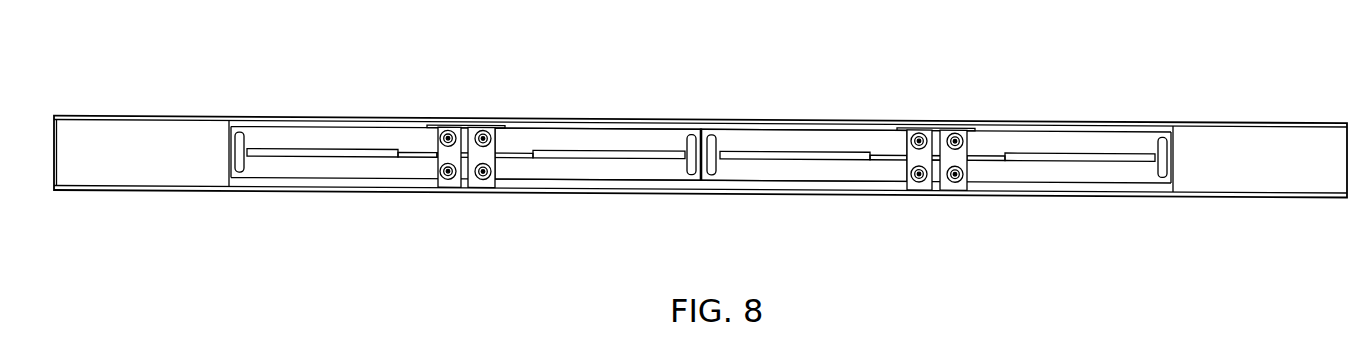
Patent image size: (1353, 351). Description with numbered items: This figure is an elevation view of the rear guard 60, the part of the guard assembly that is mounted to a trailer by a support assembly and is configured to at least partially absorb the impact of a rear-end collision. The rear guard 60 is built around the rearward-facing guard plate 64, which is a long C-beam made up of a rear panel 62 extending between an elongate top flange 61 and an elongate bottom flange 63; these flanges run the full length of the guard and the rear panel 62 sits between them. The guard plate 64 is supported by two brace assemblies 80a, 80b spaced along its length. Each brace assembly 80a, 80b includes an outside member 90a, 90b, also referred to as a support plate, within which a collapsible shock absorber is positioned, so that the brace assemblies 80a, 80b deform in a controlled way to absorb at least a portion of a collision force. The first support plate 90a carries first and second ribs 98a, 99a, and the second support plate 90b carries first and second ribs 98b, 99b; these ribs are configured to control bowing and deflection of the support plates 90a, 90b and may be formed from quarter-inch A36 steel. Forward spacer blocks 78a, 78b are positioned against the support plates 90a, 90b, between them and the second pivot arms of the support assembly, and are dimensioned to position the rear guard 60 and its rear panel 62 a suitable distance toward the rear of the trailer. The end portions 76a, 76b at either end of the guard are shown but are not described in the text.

The rear guard 60 is at (1196, 56).
The top flange 61 is at (324, 120).
The rear panel 62 is at (706, 183).
The bottom flange 63 is at (263, 190).
The guard plate 64 is at (277, 123).
The first end cap 76a is at (134, 170).
The second end cap 76b is at (1243, 182).
The forward spacer block 78a is at (453, 156).
The forward spacer block 78b is at (948, 157).
The first brace assembly 80a is at (466, 177).
The second brace assembly 80b is at (941, 179).
The first outside member 90a is at (593, 135).
The second outside member 90b is at (765, 135).
The first rib 98a is at (348, 152).
The first rib 98b is at (823, 155).
The second rib 99a is at (588, 153).
The second rib 99b is at (1072, 156).